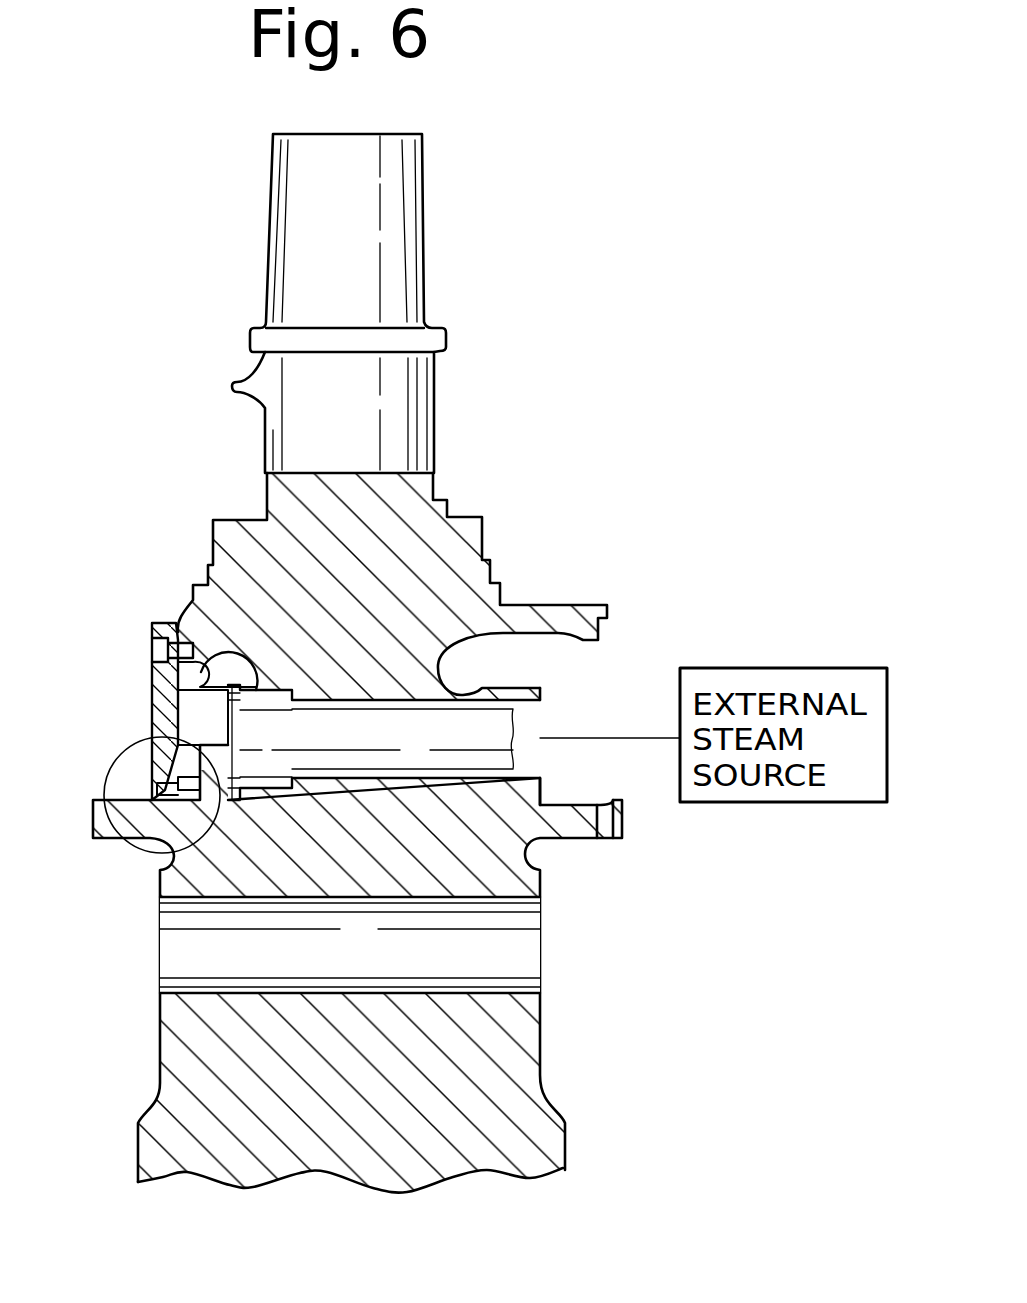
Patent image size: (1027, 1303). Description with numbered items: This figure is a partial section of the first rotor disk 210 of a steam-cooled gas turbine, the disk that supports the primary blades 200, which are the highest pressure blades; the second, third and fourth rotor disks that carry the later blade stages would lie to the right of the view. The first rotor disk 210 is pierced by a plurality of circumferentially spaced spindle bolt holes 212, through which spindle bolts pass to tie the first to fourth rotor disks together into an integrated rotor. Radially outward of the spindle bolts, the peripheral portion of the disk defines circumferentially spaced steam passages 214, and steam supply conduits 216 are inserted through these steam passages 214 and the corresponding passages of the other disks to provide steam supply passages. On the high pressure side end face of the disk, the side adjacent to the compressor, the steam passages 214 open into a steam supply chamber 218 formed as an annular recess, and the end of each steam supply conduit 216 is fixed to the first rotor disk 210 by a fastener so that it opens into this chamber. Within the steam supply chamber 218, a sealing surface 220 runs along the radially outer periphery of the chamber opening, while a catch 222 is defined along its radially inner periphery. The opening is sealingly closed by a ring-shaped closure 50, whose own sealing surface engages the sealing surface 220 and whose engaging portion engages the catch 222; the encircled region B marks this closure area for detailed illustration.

The primary blades 200 is at (424, 262).
The first rotor disk 210 is at (565, 1072).
The spindle bolt holes 212 is at (162, 983).
The steam passages 214 is at (530, 778).
The steam supply conduits 216 is at (505, 737).
The steam supply chamber 218 is at (222, 723).
The sealing surface 220 is at (189, 630).
The catch 222 is at (168, 803).
The closure 50 is at (152, 697).
The detail region B is at (105, 790).